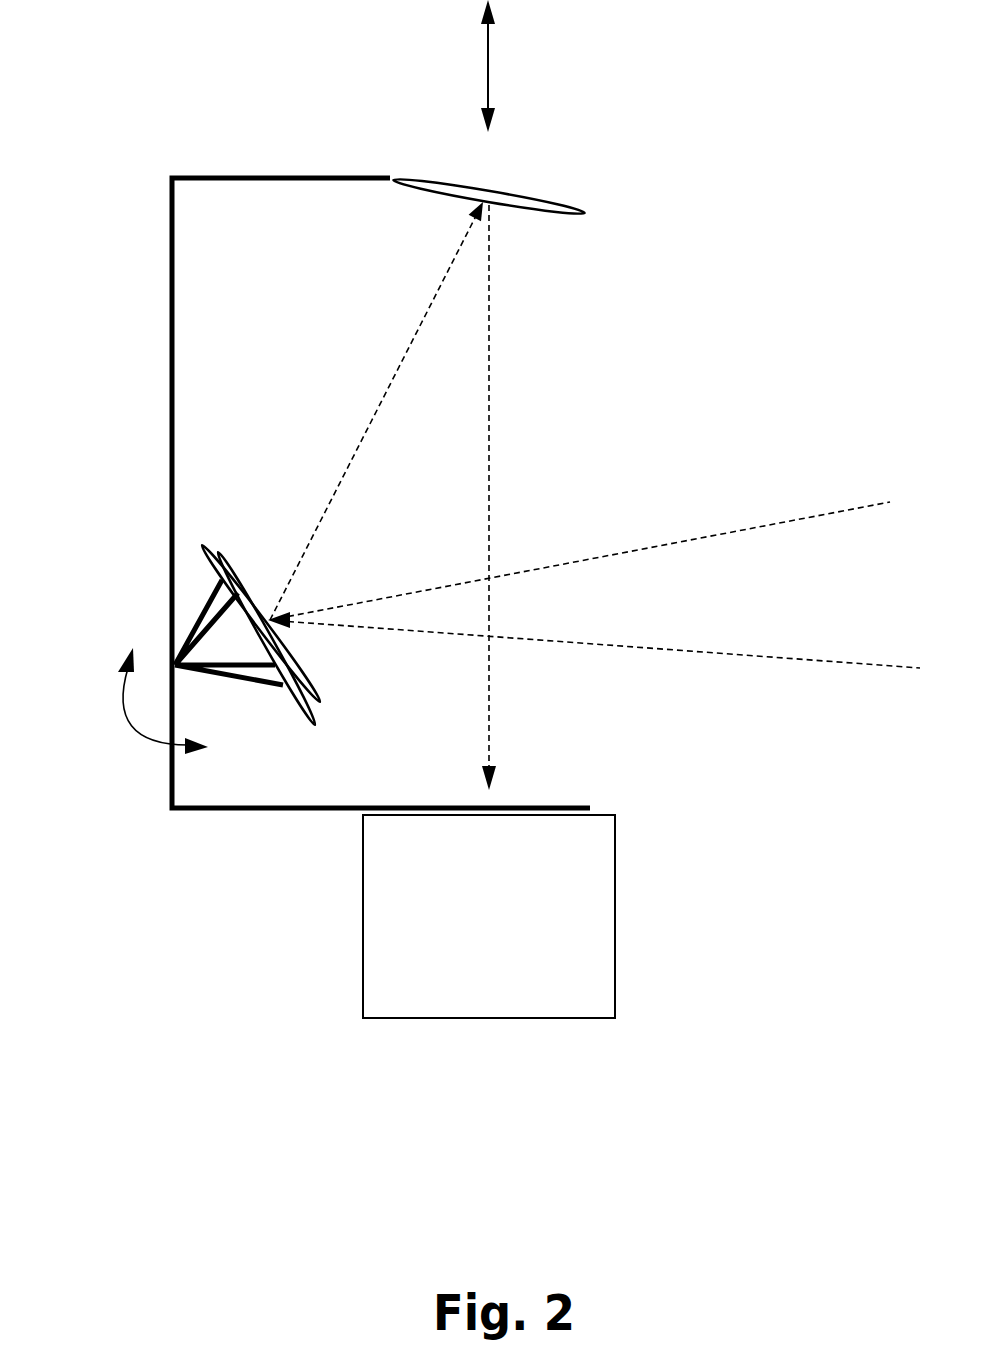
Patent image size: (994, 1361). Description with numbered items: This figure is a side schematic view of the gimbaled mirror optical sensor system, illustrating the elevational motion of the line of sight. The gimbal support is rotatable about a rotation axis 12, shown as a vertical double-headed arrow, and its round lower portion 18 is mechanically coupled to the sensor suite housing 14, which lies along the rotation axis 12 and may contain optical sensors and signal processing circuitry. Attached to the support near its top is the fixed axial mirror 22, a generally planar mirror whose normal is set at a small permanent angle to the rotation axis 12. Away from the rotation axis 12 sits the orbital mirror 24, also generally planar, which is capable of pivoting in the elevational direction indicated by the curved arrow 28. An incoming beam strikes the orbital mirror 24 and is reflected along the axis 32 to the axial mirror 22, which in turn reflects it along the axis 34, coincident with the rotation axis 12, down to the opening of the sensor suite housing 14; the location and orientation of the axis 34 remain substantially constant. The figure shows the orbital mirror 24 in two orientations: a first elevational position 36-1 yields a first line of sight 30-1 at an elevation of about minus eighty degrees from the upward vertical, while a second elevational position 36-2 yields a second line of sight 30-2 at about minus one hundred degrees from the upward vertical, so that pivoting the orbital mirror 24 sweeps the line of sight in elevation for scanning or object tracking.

The rotation axis 12 is at (488, 60).
The sensor suite housing 14 is at (615, 913).
The round lower portion 18 is at (590, 810).
The fixed axial mirror 22 is at (568, 205).
The orbital mirror 24 is at (203, 567).
The arrow indicating elevational pivoting 28 is at (158, 742).
The first line of sight 30-1 is at (663, 545).
The second line of sight 30-2 is at (663, 650).
The axis 32 is at (385, 393).
The axis 34 is at (489, 406).
The first elevational position 36-1 is at (320, 700).
The second elevational position 36-2 is at (313, 720).